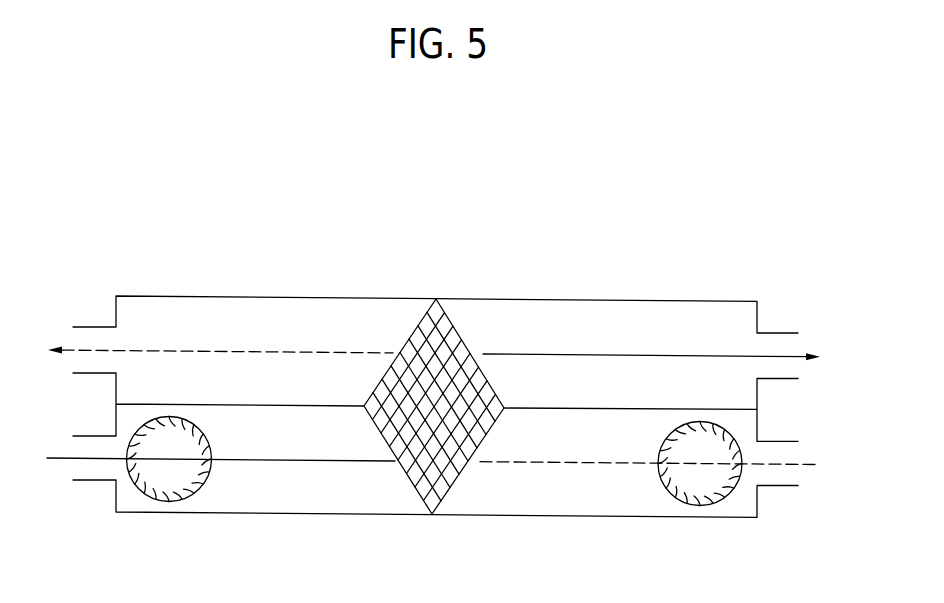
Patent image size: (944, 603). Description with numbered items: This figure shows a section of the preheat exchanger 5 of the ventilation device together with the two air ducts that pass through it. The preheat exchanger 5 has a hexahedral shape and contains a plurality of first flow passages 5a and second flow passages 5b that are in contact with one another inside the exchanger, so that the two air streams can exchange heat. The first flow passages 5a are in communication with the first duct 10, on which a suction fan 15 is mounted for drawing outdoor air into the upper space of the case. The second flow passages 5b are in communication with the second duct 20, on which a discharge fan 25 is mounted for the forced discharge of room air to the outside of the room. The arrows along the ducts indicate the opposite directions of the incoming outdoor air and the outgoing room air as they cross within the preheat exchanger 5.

The preheat exchanger 5 is at (436, 413).
The first flow passages 5a is at (418, 445).
The second flow passages 5b is at (420, 365).
The first duct 10 is at (634, 315).
The suction fan 15 is at (171, 502).
The second duct 20 is at (263, 313).
The discharge fan 25 is at (703, 506).